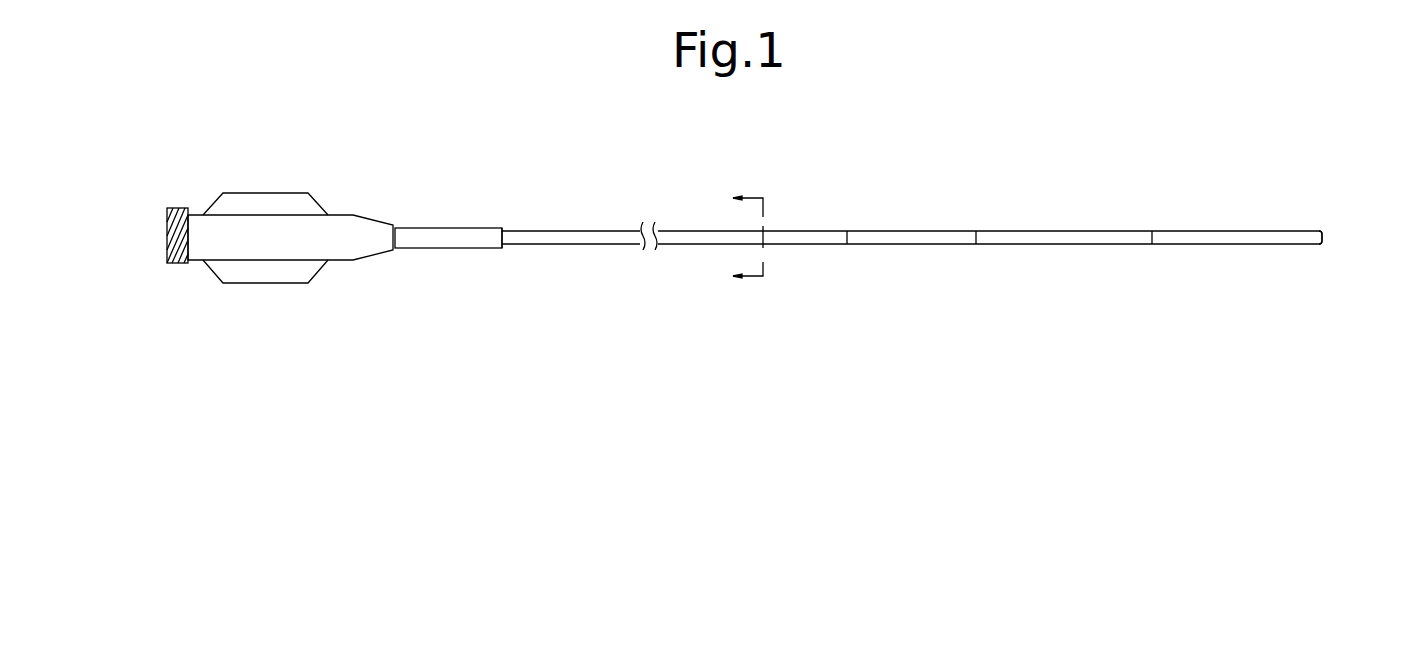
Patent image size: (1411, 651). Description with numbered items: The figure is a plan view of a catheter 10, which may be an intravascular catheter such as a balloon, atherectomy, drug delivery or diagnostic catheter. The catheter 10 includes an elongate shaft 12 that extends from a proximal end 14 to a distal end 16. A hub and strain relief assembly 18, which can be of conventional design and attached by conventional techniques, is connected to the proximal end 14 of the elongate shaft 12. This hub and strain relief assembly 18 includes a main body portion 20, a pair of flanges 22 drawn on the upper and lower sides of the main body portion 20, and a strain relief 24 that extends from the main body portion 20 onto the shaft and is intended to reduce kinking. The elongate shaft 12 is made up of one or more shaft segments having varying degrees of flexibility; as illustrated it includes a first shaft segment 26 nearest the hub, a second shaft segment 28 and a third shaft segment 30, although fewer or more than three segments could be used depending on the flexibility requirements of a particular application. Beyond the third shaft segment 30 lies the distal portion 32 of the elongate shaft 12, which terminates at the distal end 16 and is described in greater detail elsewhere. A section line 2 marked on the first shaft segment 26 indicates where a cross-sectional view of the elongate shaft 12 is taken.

The catheter 10 is at (423, 165).
The elongate shaft 12 is at (833, 194).
The proximal end 14 is at (496, 290).
The distal end 16 is at (1320, 278).
The hub and strain relief assembly 18 is at (184, 291).
The main body portion 20 is at (302, 244).
The flanges 22 is at (267, 205).
The strain relief 24 is at (452, 235).
The first shaft segment 26 is at (575, 240).
The second shaft segment 28 is at (912, 244).
The third shaft segment 30 is at (1062, 244).
The distal portion 32 is at (1237, 232).
The line 2- 2 is at (736, 240).